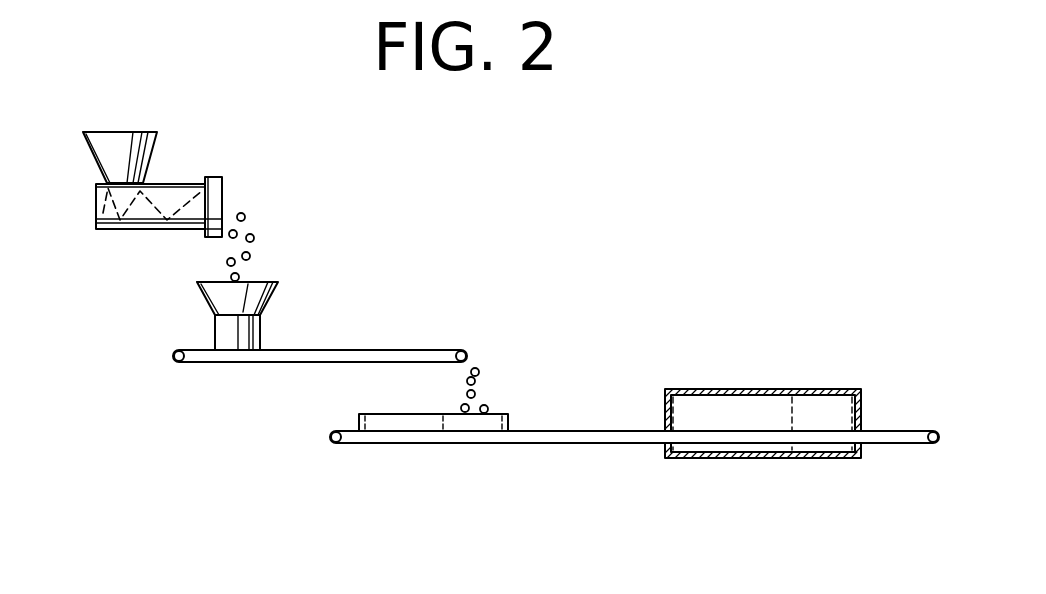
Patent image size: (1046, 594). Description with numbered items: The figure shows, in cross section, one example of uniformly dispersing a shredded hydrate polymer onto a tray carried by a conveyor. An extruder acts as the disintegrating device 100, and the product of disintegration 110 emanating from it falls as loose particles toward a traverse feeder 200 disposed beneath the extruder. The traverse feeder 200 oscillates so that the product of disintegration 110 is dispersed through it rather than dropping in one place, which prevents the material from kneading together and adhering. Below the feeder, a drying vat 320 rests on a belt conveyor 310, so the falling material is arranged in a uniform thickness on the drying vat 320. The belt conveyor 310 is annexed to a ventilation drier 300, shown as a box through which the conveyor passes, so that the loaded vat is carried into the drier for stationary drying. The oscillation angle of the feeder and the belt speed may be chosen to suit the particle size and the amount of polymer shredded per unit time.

The disintegrating device 100 is at (157, 152).
The product of disintegration 110 is at (257, 238).
The traverse feeder 200 is at (208, 362).
The ventilation drier 300 is at (780, 448).
The belt conveyor 310 is at (618, 441).
The drying vat 320 is at (508, 418).